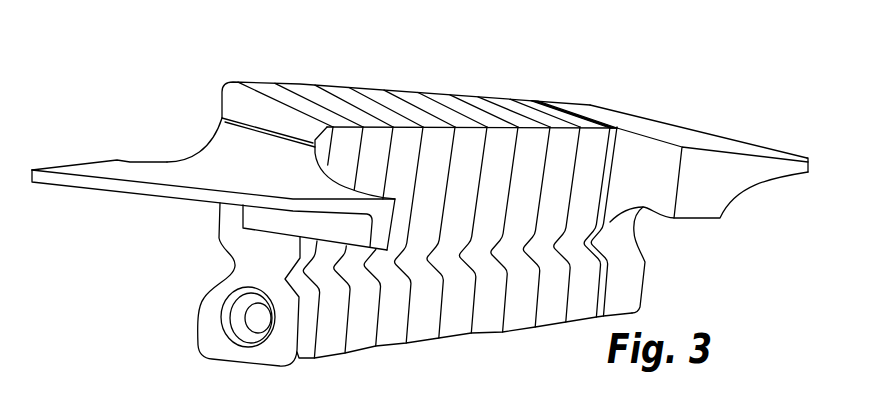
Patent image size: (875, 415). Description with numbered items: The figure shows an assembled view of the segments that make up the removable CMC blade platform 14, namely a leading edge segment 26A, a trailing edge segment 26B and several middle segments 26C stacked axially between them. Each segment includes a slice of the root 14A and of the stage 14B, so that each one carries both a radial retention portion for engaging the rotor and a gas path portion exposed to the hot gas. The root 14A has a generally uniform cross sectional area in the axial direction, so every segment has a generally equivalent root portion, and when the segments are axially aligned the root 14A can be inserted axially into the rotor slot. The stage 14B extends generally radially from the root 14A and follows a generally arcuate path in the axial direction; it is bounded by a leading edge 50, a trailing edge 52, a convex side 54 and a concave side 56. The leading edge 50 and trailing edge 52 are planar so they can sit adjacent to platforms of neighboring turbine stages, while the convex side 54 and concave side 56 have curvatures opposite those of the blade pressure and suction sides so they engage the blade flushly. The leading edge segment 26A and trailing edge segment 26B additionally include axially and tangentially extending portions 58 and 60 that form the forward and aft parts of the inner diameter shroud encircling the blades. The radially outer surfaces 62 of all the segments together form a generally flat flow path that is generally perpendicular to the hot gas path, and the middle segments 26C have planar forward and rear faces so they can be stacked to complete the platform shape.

The removable CMC blade platform 14 is at (622, 86).
The root 14A is at (666, 276).
The stage 14B is at (764, 211).
The leading edge segment 26A is at (218, 167).
The trailing edge segment 26B is at (655, 110).
The middle segments 26C is at (356, 80).
The leading edge 50 is at (90, 192).
The trailing edge 52 is at (812, 170).
The convex side 54 is at (293, 83).
The concave side 56 is at (499, 148).
The axially and tangentially extending portion 58 is at (77, 172).
The axially and tangentially extending portion 60 is at (757, 143).
The radially outer surfaces 62 is at (240, 143).